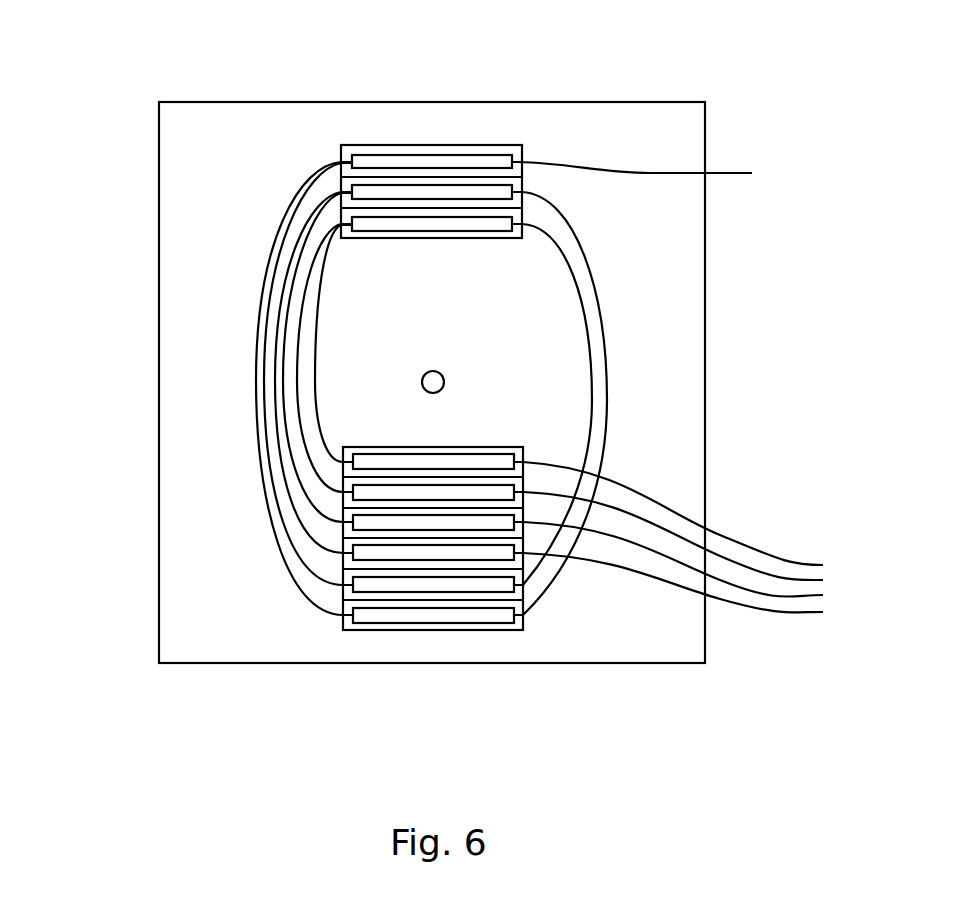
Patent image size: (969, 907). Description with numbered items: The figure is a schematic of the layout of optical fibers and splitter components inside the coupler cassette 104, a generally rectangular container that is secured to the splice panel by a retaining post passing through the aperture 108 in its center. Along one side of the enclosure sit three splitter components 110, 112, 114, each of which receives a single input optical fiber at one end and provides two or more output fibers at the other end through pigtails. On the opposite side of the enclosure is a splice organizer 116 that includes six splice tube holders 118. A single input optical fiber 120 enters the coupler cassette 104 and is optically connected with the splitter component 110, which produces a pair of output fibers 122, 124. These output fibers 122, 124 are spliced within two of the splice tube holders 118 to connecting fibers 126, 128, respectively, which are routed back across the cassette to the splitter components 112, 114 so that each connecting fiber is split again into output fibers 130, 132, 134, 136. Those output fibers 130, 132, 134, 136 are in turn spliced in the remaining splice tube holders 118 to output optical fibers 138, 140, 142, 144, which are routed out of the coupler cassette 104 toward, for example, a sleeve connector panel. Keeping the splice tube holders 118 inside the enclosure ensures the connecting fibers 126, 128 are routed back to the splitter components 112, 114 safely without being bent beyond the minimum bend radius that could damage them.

The coupler cassette 104 is at (244, 90).
The aperture 108 is at (434, 372).
The splitter component 110 is at (385, 160).
The splitter component 112 is at (438, 190).
The splitter component 114 is at (485, 218).
The splice organizer 116 is at (488, 648).
The splice tube holders 118 is at (460, 460).
The input optical fiber 120 is at (727, 173).
The output fiber 122 is at (265, 337).
The output fiber 124 is at (257, 302).
The connecting fiber 126 is at (550, 603).
The connecting fiber 128 is at (569, 580).
The output fiber 130 is at (276, 368).
The output fiber 132 is at (287, 397).
The output fiber 134 is at (298, 425).
The output fiber 136 is at (317, 447).
The output optical fiber 138 is at (730, 533).
The output optical fiber 140 is at (765, 570).
The output optical fiber 142 is at (755, 592).
The output optical fiber 144 is at (785, 613).